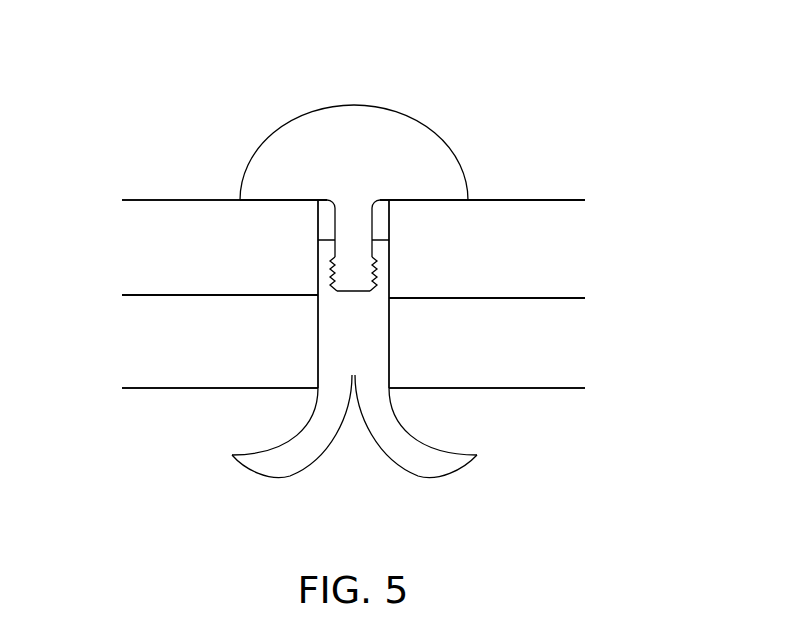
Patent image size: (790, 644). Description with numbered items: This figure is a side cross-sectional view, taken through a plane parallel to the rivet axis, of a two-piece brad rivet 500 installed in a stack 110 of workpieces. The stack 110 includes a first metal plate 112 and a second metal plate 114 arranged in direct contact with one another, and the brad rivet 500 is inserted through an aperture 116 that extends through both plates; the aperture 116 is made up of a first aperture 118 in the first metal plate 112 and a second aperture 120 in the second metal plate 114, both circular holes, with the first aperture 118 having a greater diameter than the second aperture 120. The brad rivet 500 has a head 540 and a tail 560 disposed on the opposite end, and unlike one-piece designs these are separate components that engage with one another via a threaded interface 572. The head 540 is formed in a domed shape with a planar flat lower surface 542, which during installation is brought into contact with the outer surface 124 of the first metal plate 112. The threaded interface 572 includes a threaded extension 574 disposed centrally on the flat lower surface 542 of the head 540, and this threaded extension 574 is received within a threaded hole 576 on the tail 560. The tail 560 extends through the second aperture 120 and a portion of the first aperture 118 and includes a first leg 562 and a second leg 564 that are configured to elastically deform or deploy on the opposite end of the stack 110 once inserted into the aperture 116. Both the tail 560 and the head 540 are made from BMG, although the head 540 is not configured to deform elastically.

The brad rivet 500 is at (241, 79).
The head 540 is at (376, 126).
The flat lower surface 542 is at (275, 202).
The first aperture 118 is at (389, 222).
The outer surface 124 is at (520, 200).
The first metal plate 112 is at (546, 248).
The second metal plate 114 is at (546, 350).
The stack 110 is at (133, 352).
The aperture 116 is at (316, 352).
The second aperture 120 is at (391, 339).
The threaded interface 572 is at (376, 277).
The threaded extension 574 is at (345, 282).
The threaded hole 576 is at (352, 292).
The tail 560 is at (353, 460).
The first leg 562 is at (290, 463).
The second leg 564 is at (418, 463).